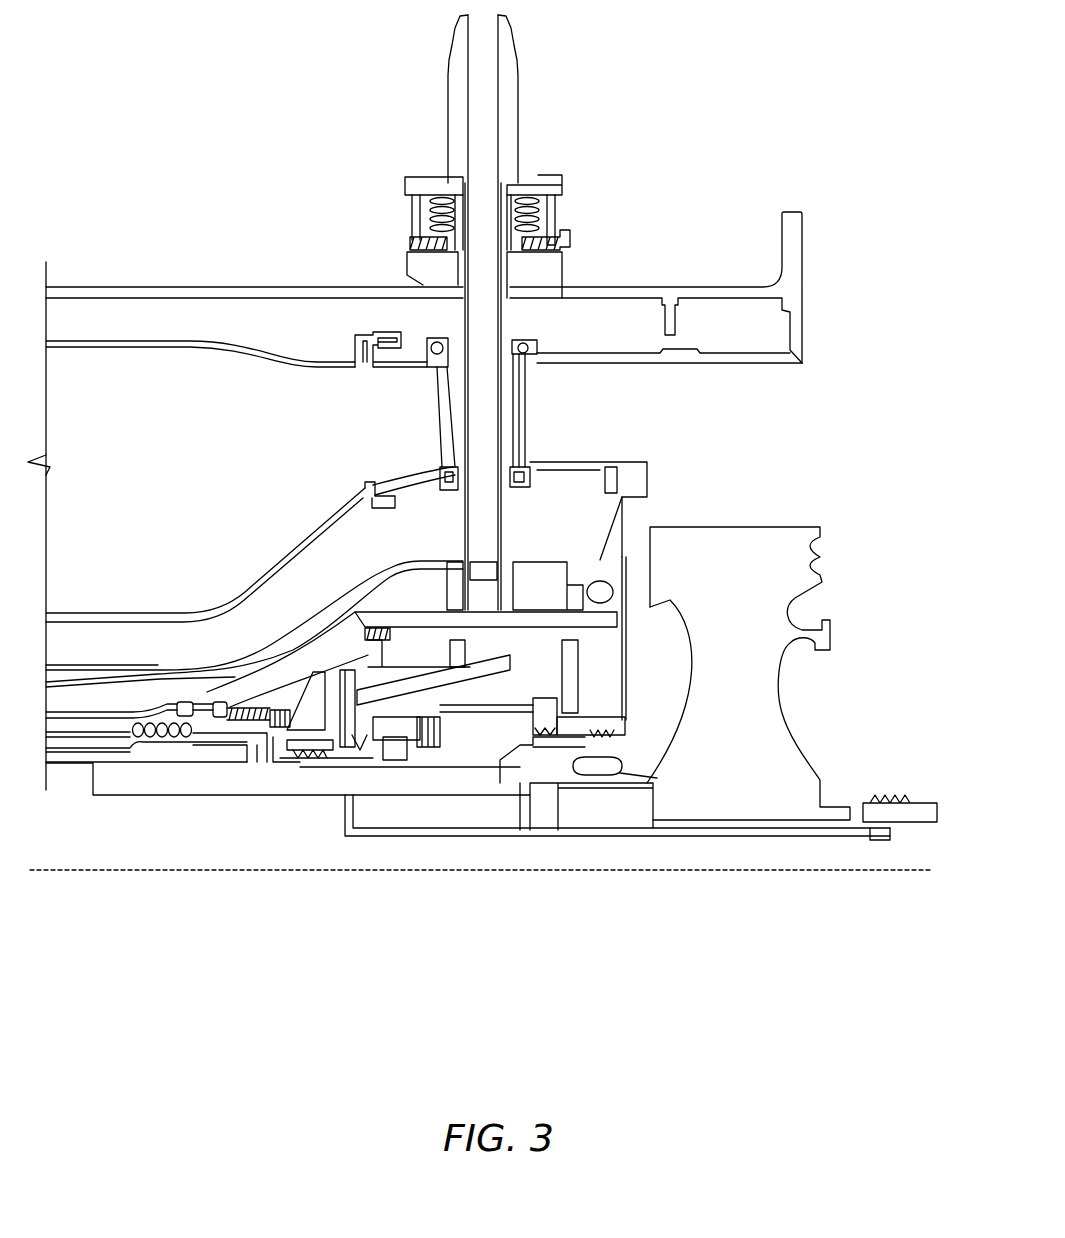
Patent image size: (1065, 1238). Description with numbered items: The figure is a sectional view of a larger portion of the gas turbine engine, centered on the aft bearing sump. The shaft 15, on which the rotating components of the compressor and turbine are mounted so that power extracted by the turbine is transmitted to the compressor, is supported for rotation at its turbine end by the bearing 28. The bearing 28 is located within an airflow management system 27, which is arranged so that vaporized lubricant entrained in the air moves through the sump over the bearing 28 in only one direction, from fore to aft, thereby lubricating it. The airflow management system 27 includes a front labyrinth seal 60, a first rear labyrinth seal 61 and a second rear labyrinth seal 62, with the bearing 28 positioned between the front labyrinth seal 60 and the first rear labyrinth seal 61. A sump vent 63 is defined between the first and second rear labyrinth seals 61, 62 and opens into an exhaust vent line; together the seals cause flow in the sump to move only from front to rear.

The shaft 15 is at (140, 876).
The airflow management system 27 is at (640, 958).
The bearing 28 is at (393, 767).
The front labyrinth seal 60 is at (307, 765).
The first rear labyrinth seal 61 is at (540, 737).
The second rear labyrinth seal 62 is at (598, 737).
The sump vent 63 is at (615, 723).